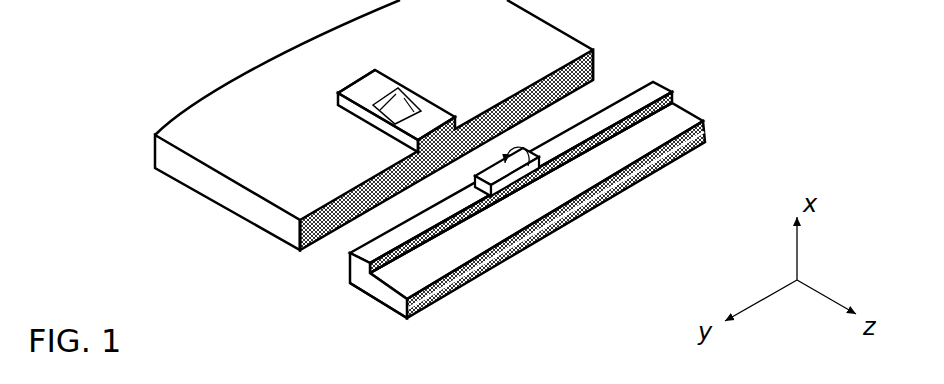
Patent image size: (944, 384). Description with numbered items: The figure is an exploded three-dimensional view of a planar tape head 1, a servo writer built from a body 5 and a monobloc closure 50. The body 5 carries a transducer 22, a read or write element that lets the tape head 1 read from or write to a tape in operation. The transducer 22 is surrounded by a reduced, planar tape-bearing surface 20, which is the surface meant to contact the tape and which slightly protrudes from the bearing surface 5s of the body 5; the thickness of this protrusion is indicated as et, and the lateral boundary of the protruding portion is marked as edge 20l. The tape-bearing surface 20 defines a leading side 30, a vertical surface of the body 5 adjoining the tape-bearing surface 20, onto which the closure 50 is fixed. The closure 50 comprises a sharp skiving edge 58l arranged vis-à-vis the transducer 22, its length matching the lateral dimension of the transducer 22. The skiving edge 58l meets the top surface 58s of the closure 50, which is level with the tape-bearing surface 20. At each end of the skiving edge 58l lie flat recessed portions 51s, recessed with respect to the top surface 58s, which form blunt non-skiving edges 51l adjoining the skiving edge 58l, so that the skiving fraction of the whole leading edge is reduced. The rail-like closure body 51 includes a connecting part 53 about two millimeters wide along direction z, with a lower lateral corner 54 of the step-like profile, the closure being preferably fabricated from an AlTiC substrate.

The tape head 1 is at (140, 95).
The body 5 is at (157, 177).
The bearing surface 5s is at (268, 186).
The tape-bearing surface 20 is at (428, 118).
The lateral edge of plate 20l is at (593, 50).
The transducer 22 is at (403, 86).
The leading side 30 is at (326, 223).
The closure 50 is at (698, 107).
The rail body 51 is at (349, 284).
The recessed portion 51s is at (625, 108).
The non-skiving edge 51l is at (655, 96).
The connecting part 53 is at (377, 300).
The lateral corner edge of rail 54 is at (408, 318).
The top surface 58s is at (618, 184).
The skiving edge 58l is at (535, 165).
The thickness dimension e_t et is at (358, 79).